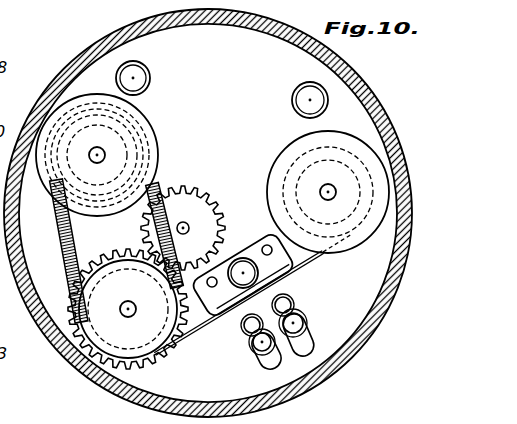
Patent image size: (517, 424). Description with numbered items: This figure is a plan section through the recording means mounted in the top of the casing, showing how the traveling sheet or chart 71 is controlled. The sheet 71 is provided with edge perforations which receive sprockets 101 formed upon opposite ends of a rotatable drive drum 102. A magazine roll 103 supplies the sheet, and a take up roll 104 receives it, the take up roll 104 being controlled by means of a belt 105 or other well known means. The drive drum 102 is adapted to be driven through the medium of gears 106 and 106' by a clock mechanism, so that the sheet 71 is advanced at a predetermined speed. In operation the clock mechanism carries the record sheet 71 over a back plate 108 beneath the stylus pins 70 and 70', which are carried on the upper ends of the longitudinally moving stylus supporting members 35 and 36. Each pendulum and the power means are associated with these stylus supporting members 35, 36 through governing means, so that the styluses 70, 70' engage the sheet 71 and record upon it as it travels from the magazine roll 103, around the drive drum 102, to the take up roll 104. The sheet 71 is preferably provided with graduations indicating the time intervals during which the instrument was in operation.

The take up roll 104 is at (68, 105).
The magazine roll 103 is at (367, 152).
The gear 106' is at (197, 214).
The gear 106 is at (128, 294).
The rotatable drive drum 102 is at (103, 316).
The sprockets 101 is at (85, 344).
The belt 105 is at (162, 208).
The traveling sheet or chart 71 is at (65, 254).
The back plate 108 is at (292, 284).
The stylus or pen 70 is at (250, 343).
The stylus supporting member 36 is at (253, 349).
The stylus supporting member 35 is at (304, 322).
The stylus pin 70' is at (307, 349).